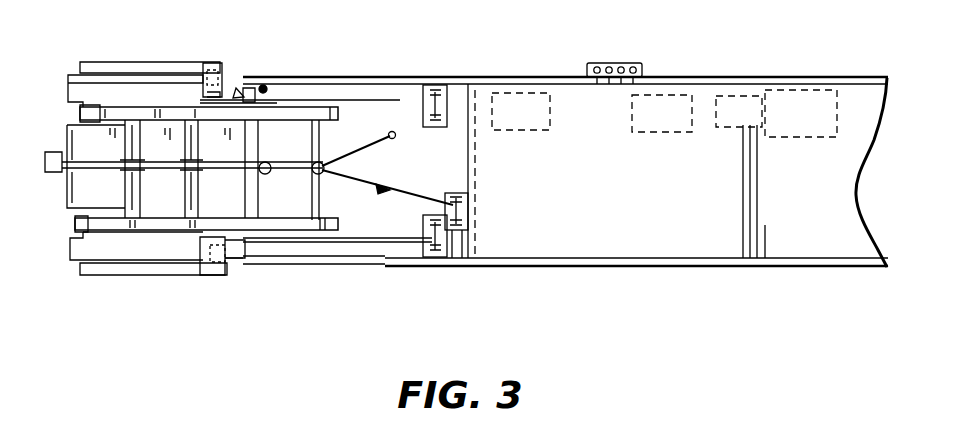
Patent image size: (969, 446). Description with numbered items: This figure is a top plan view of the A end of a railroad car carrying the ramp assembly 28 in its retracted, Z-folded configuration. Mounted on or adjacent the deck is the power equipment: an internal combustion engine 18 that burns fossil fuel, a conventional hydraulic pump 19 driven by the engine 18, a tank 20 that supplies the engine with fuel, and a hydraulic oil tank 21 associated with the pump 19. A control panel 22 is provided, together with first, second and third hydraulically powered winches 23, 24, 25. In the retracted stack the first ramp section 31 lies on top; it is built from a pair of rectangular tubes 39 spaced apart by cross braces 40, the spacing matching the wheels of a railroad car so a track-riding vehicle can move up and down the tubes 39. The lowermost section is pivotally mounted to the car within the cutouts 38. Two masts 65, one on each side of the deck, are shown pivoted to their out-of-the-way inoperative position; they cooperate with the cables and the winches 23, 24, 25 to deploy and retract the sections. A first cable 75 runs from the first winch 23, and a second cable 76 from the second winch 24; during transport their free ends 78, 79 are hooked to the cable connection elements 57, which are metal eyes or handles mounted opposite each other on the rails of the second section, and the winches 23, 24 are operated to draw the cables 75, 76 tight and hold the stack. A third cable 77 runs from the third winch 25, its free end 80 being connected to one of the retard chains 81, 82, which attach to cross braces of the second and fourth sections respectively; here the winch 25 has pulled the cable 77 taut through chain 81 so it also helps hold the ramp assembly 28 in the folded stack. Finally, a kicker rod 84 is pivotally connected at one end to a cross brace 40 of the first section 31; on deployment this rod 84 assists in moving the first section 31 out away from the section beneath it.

The internal combustion engine 18 is at (812, 90).
The hydraulic pump 19 is at (732, 98).
The tank 20 is at (533, 94).
The hydraulic oil tank 21 is at (667, 99).
The control panel 22 is at (630, 55).
The first winch 23 is at (440, 258).
The second winch 24 is at (442, 85).
The third winch 25 is at (468, 258).
The ramp assembly 28 is at (265, 87).
The first ramp section 31 is at (160, 99).
The cutouts 38 is at (78, 108).
The tubes 39 is at (280, 108).
The cross braces 40 is at (258, 182).
The cable connection elements 57 is at (220, 88).
The mast 65 is at (137, 64).
The first cable 75 is at (372, 245).
The second cable 76 is at (390, 118).
The third cable 77 is at (413, 196).
The free end of first cable 78 is at (243, 261).
The free end of second cable 79 is at (240, 96).
The free end of third cable 80 is at (388, 192).
The retard chain 81 is at (352, 178).
The retard chain 82 is at (350, 150).
The kicker rod 84 is at (153, 169).